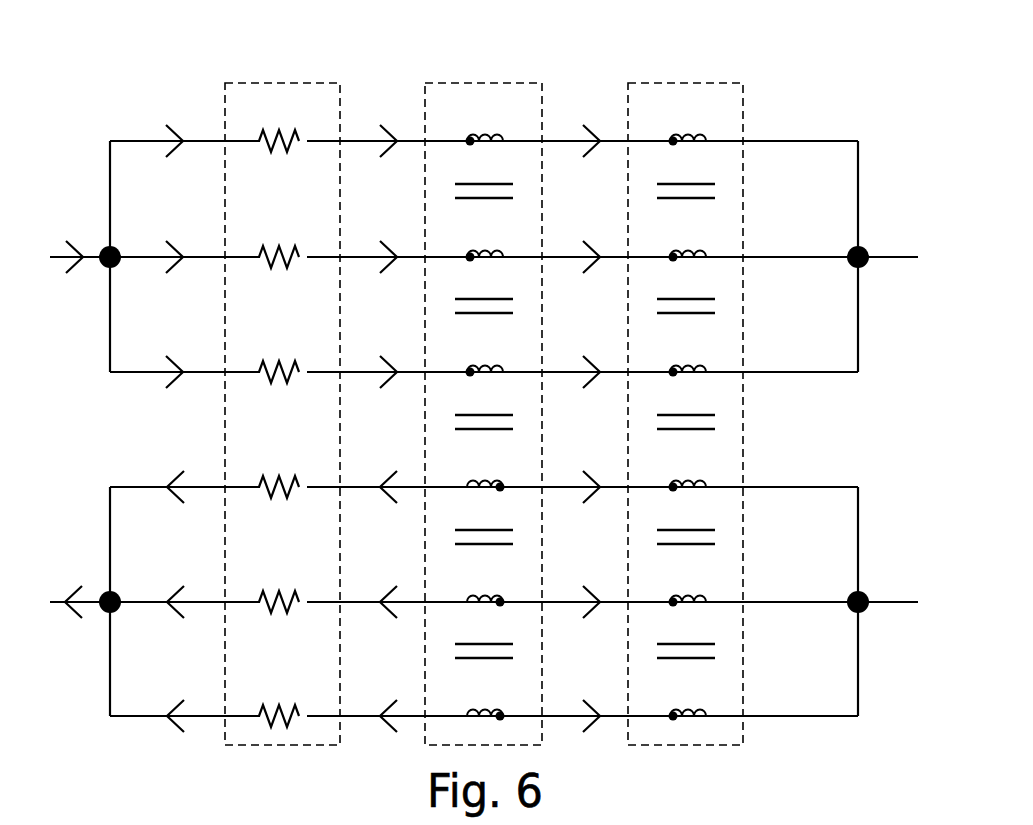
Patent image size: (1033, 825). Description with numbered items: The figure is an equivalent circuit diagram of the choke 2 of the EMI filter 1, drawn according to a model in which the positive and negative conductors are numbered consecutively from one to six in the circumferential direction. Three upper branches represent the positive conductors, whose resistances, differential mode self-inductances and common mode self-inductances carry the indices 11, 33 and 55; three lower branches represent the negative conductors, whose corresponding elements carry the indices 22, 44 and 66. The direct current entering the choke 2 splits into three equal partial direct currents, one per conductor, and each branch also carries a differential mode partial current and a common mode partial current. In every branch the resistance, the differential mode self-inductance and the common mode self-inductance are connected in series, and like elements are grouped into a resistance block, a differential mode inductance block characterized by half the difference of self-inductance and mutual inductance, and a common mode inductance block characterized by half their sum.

The choke 2 is at (491, 382).
The EMI filter 1 is at (491, 382).
The first positive conductor branch elements 11 is at (484, 122).
The second positive conductor branch elements 33 is at (484, 238).
The third positive conductor branch elements 55 is at (484, 353).
The first negative conductor branch elements 22 is at (484, 468).
The second negative conductor branch elements 44 is at (484, 583).
The third negative conductor branch elements 66 is at (484, 697).